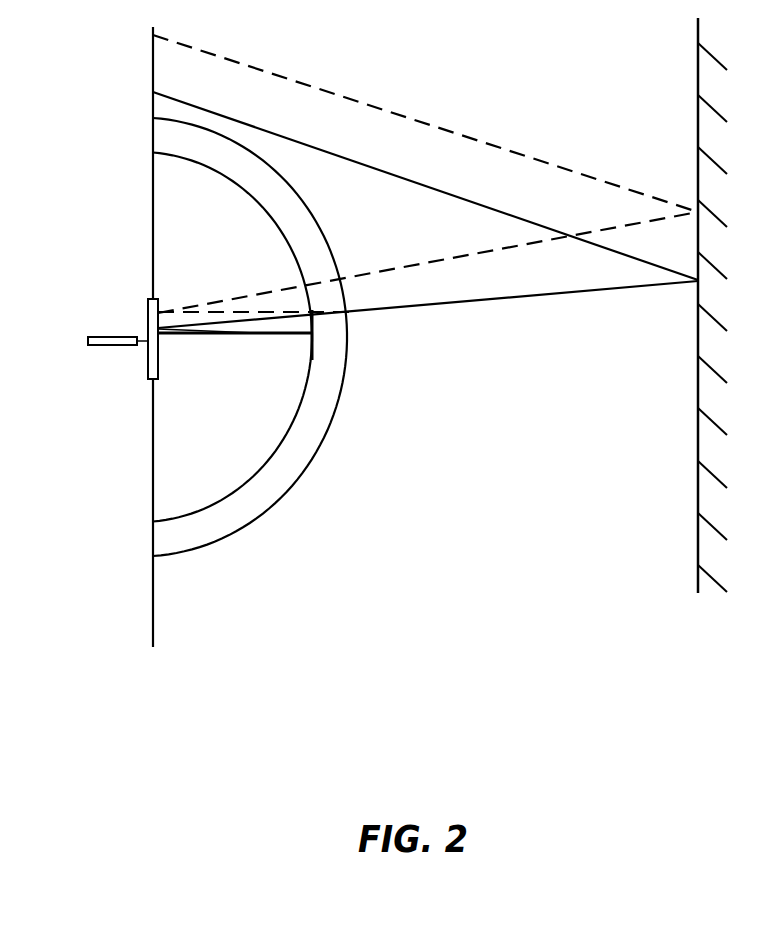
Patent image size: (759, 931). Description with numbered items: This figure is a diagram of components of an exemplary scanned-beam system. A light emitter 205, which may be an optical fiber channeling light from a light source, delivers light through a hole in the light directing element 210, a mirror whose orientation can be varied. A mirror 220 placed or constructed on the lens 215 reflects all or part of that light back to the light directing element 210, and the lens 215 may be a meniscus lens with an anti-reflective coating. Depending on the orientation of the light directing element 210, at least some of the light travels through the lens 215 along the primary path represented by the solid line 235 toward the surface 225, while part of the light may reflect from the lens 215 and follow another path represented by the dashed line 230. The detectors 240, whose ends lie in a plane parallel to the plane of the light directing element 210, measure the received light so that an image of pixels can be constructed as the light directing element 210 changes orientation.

The light emitter 205 is at (112, 337).
The light directing element 210 is at (148, 366).
The lens 215 is at (307, 463).
The mirror 220 is at (310, 358).
The surface 225 is at (698, 434).
The dashed line 230 is at (440, 128).
The solid line 235 is at (428, 305).
The detectors 240 is at (153, 60).